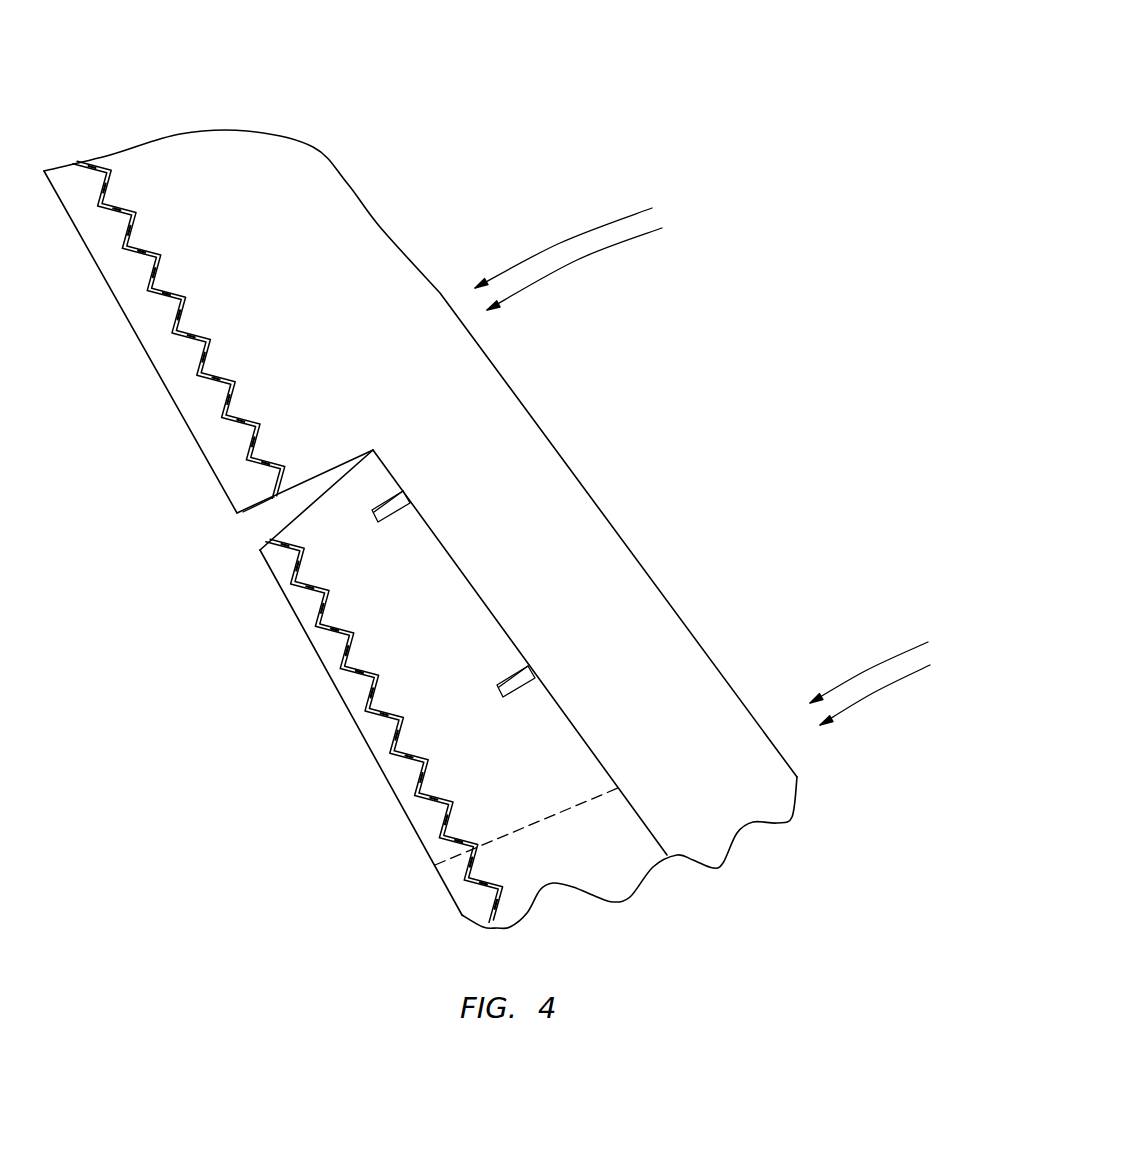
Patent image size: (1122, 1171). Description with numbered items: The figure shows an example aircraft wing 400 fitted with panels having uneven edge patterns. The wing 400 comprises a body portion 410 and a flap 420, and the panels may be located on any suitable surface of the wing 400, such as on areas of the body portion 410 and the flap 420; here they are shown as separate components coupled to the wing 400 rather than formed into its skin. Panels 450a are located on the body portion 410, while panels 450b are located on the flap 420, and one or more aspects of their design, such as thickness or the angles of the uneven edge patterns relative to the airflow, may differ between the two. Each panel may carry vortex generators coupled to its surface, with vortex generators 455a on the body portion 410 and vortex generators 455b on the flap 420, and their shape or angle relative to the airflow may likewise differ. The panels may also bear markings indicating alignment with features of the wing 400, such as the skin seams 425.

The aircraft wing 400 is at (708, 313).
The body portion 410 is at (280, 257).
The flap 420 is at (403, 782).
The skin seams 425 is at (618, 788).
The panels 450a is at (113, 180).
The vortex generators 455a is at (137, 233).
The panels 450b is at (297, 543).
The vortex generators 455b is at (313, 583).